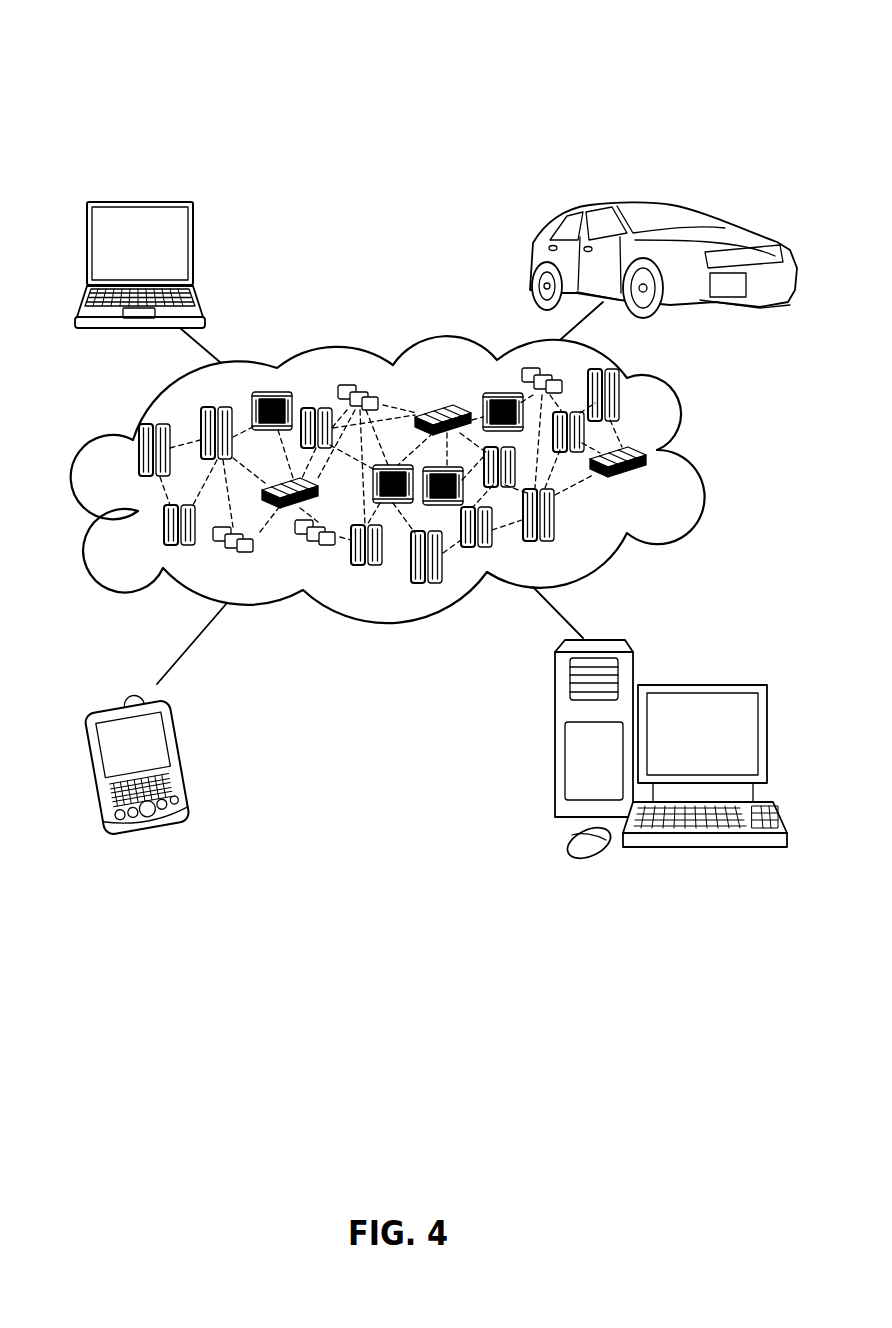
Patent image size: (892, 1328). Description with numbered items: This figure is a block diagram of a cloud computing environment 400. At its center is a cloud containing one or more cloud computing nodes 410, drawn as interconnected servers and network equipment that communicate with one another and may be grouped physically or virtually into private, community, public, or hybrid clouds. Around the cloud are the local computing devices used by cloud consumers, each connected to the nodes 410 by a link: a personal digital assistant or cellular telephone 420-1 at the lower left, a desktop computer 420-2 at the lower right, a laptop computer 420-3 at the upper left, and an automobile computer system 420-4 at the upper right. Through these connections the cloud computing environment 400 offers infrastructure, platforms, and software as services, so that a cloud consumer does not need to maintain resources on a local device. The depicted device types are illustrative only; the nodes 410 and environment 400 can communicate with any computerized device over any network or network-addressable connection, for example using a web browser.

The cloud computing environment 400 is at (324, 53).
The cloud computing nodes 410 is at (662, 488).
The personal digital assistant or cellular telephone 420-1 is at (185, 757).
The desktop computer 420-2 is at (700, 684).
The laptop computer 420-3 is at (193, 251).
The automobile computer system 420-4 is at (530, 262).